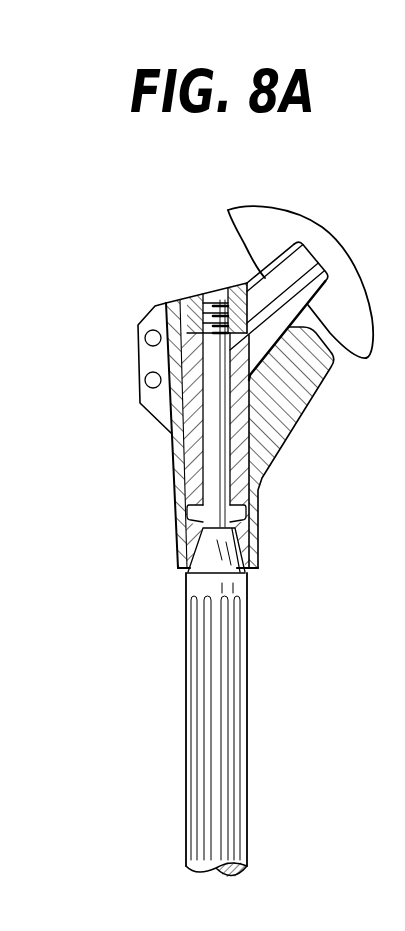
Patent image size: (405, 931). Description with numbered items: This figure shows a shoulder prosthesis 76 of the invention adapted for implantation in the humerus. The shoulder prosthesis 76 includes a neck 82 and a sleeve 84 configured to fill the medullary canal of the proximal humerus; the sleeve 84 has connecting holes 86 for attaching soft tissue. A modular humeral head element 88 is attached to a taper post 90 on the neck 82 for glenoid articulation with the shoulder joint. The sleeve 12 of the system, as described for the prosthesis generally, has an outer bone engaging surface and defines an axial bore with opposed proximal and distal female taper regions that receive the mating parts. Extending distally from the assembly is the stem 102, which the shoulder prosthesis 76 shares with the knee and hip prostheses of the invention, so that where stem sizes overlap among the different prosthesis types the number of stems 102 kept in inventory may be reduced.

The shoulder prosthesis 76 is at (139, 246).
The sleeve 12 is at (172, 460).
The connecting holes 86 is at (145, 380).
The neck 82 is at (265, 288).
The taper post 90 is at (305, 265).
The modular humeral head element 88 is at (278, 230).
The sleeve 84 is at (290, 430).
The stem 102 is at (248, 663).